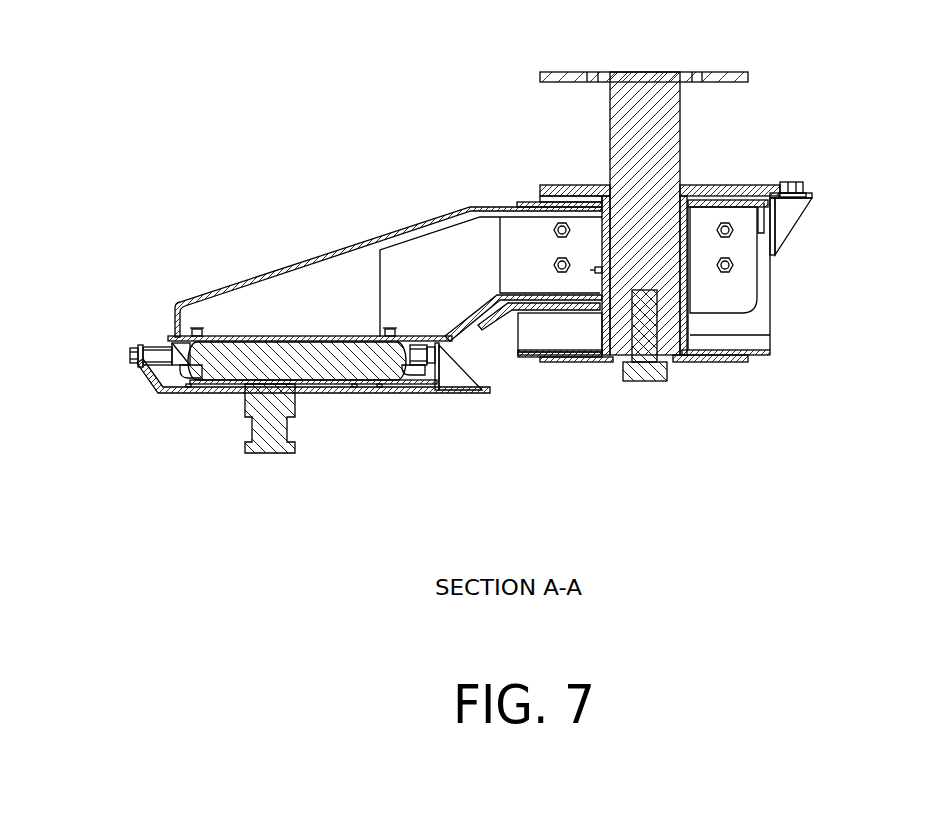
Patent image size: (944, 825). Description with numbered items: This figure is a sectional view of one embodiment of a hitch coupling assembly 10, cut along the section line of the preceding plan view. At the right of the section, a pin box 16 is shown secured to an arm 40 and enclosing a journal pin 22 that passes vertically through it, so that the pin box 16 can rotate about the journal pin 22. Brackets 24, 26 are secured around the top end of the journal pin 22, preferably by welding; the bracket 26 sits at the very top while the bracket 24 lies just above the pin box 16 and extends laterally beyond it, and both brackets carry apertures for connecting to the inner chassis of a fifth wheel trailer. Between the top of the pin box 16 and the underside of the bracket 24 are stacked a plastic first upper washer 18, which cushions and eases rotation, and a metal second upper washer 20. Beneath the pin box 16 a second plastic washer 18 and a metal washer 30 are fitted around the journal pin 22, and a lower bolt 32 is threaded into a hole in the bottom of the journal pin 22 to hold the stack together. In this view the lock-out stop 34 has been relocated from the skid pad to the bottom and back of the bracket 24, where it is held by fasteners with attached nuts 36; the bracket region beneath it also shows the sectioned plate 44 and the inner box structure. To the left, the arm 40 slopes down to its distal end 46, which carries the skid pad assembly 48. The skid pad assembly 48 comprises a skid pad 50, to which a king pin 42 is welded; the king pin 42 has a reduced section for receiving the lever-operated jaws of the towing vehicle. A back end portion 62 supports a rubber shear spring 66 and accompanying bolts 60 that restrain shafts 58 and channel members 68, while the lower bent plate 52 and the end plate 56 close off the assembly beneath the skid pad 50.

The hitch coupling assembly 10 is at (462, 269).
The pin box 16 is at (577, 337).
The upper washer 18 is at (643, 285).
The second upper washer 20 is at (669, 287).
The journal pin 22 is at (672, 182).
The bracket 24 is at (672, 161).
The bracket 26 is at (672, 45).
The washer 30 is at (730, 387).
The lower bolt 32 is at (685, 377).
The lock-out stop 34 is at (826, 224).
The nuts 36 is at (830, 157).
The arm 40 is at (373, 243).
The king pin 42 is at (304, 457).
The side plate 44 is at (771, 273).
The distal end 46 is at (373, 267).
The skid pad assembly 48 is at (309, 395).
The skid pad 50 is at (329, 436).
The bent bracket plate 52 is at (293, 421).
The end plate 56 is at (498, 378).
The shafts 58 is at (136, 319).
The bolts 60 is at (93, 381).
The back end portion 62 is at (455, 360).
The rubber shear spring 66 is at (297, 436).
The channel members 68 is at (311, 428).